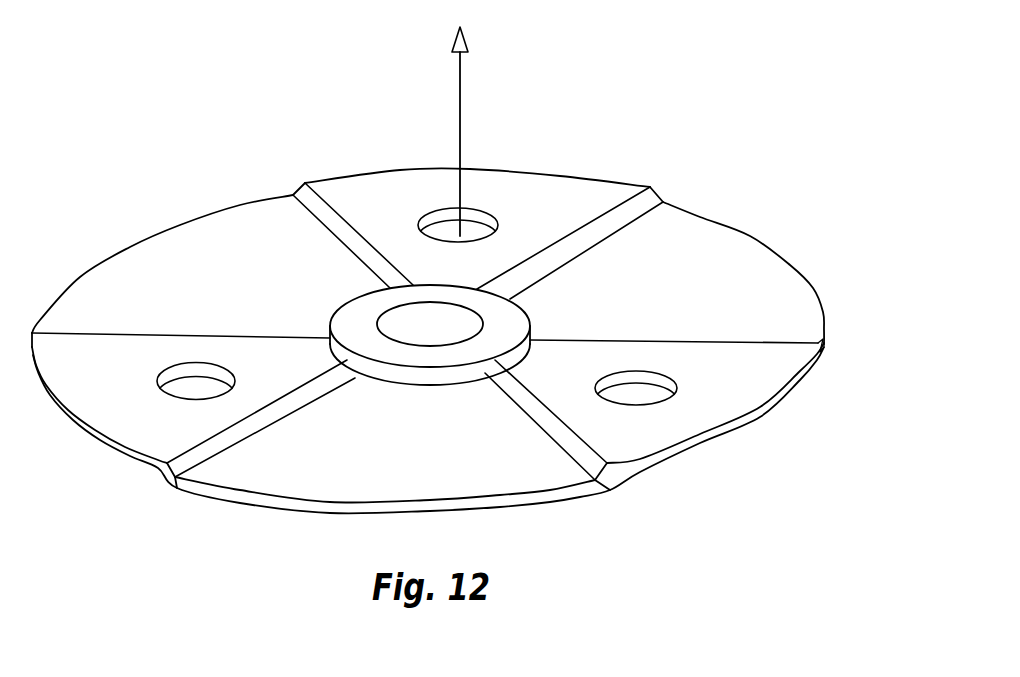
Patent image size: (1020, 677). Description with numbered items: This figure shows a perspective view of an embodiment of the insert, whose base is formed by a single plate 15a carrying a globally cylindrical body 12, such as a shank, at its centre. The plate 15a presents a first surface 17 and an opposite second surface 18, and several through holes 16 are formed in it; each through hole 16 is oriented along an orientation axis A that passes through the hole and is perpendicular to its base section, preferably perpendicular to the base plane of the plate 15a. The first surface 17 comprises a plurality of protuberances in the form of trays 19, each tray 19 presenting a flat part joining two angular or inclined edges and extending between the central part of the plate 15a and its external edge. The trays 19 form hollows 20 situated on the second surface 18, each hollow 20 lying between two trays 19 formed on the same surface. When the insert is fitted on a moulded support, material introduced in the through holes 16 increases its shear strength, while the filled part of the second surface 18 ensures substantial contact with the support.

The body 12 is at (500, 313).
The first plate 15a is at (808, 235).
The through hole 16 is at (194, 387).
The first surface 17 is at (385, 160).
The second surface 18 is at (371, 524).
The tray 19 is at (577, 192).
The hollow 20 is at (248, 197).
The orientation axis A is at (463, 88).